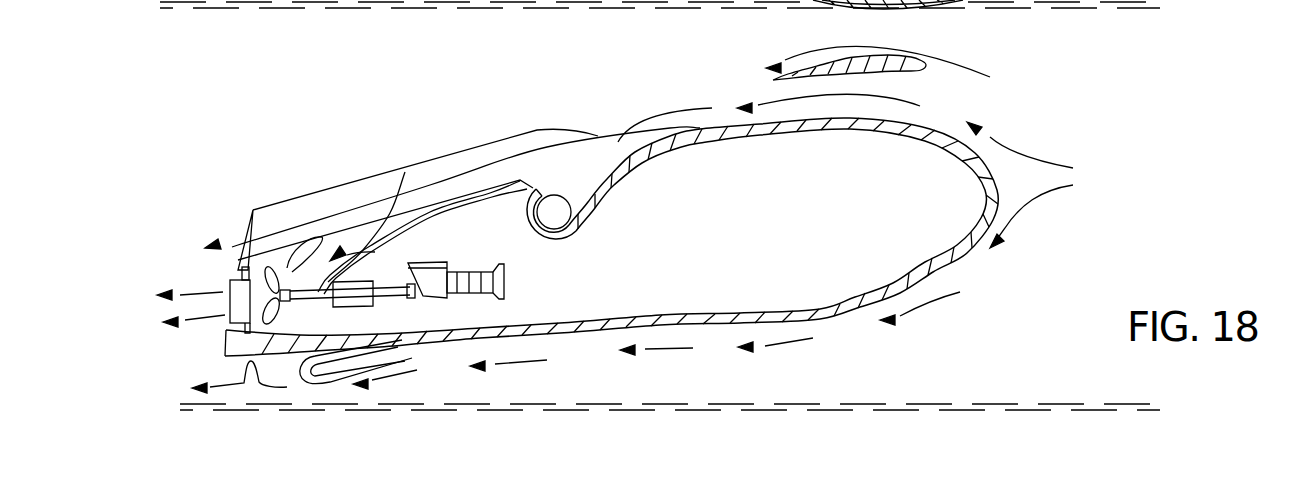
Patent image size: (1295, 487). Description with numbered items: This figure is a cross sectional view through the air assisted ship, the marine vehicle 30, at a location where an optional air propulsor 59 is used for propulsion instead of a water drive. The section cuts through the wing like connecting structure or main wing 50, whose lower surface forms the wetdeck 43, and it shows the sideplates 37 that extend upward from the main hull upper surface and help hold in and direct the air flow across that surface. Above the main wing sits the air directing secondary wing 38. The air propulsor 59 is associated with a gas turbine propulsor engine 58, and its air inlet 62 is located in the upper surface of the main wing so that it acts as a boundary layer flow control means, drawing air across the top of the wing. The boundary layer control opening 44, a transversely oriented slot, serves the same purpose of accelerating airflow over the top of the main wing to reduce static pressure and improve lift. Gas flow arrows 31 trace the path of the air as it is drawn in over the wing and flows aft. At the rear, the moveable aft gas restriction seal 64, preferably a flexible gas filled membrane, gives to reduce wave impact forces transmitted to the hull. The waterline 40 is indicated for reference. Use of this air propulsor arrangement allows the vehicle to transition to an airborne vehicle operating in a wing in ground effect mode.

The marine vehicle 30 is at (940, 263).
The gas flow arrows 31 is at (1027, 155).
The sideplates 37 is at (546, 146).
The air directing secondary wing 38 is at (922, 72).
The waterline 40 is at (463, 3).
The wetdeck 43 is at (822, 312).
The boundary layer control opening 44 is at (573, 197).
The wing like connecting structure 50 is at (762, 130).
The gas turbine propulsor engine 58 is at (506, 283).
The air propulsor 59 is at (266, 284).
The propulsor engine air inlet 62 is at (405, 172).
The aft gas restriction seal 64 is at (372, 337).